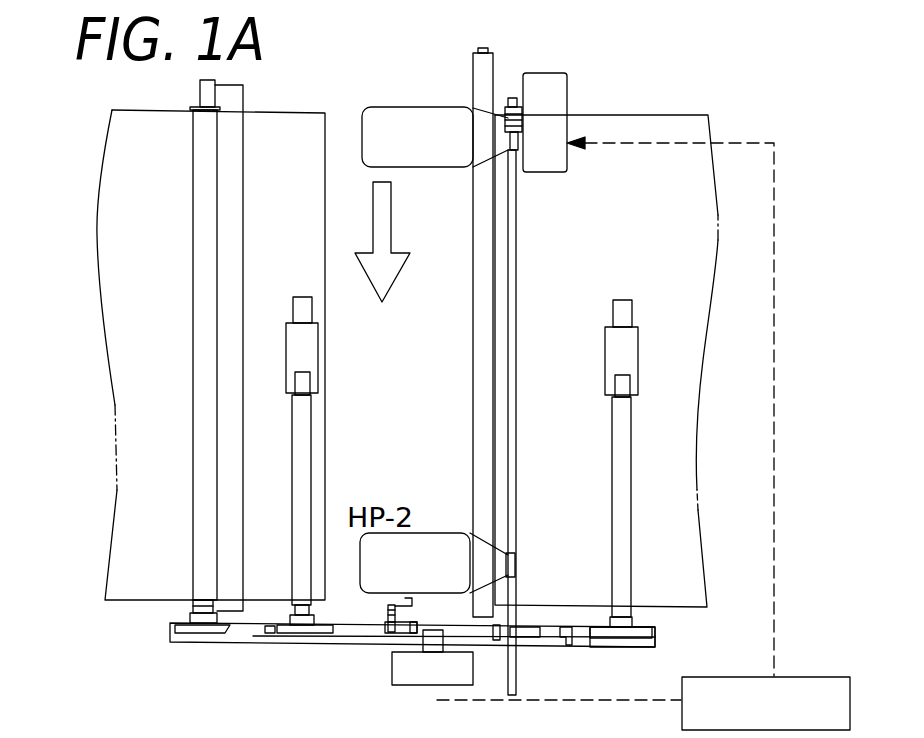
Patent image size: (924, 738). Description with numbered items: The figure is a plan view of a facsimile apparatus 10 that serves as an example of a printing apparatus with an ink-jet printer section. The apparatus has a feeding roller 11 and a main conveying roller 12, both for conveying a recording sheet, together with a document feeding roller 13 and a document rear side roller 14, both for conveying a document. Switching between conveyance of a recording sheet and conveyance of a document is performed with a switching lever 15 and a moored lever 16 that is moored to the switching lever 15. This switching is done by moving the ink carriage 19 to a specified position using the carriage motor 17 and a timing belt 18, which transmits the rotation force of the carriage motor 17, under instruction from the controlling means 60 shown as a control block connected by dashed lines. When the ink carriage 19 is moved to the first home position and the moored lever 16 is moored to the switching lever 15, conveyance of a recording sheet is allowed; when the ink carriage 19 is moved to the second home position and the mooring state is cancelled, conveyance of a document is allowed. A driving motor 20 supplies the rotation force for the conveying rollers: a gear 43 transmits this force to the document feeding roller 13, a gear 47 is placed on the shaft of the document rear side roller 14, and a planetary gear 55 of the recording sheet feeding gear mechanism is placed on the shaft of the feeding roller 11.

The facsimile apparatus 10 is at (772, 102).
The feeding roller 11 is at (632, 360).
The main conveying roller 12 is at (487, 70).
The document feeding roller 13 is at (295, 358).
The document rear side roller 14 is at (200, 327).
The switching lever 15 is at (400, 633).
The moored lever 16 is at (388, 605).
The carriage motor 17 is at (560, 95).
The timing belt 18 is at (513, 230).
The ink carriage 19 is at (422, 115).
The driving motor 20 is at (435, 686).
The gear 43 is at (270, 633).
The gear 47 is at (172, 627).
The planetary gear 55 is at (655, 633).
The controlling means 60 is at (793, 683).